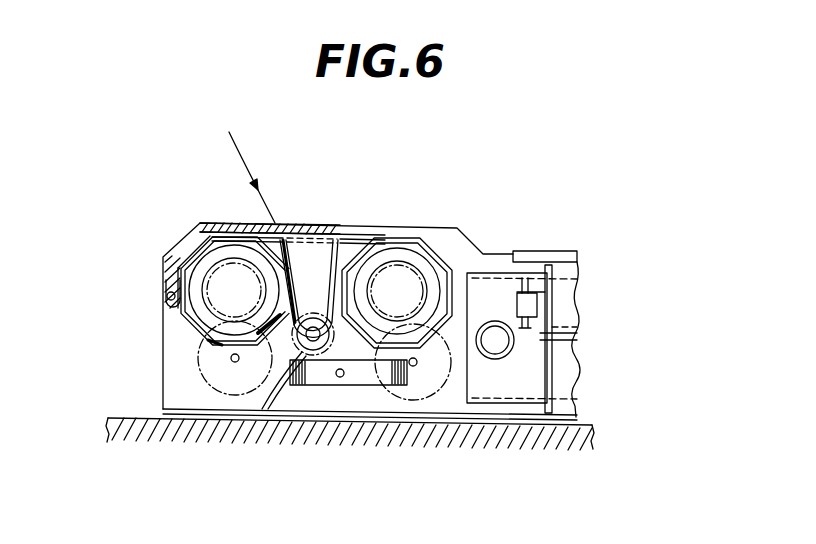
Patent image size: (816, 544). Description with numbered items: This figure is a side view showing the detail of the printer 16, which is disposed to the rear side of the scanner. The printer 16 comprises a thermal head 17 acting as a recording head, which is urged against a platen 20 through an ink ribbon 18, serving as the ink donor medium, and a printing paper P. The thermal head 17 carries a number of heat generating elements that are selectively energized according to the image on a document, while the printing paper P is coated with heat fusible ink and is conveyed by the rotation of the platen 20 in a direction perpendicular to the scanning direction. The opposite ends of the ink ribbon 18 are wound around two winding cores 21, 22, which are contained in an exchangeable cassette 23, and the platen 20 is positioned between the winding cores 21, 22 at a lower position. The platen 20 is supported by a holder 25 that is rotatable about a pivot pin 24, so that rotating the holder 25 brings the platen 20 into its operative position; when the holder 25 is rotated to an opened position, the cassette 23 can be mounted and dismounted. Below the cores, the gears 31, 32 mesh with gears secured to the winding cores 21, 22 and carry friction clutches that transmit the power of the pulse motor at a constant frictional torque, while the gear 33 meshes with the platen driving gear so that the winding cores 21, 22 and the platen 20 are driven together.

The printing paper P is at (250, 163).
The printer 16 is at (280, 385).
The thermal head 17 is at (302, 375).
The ink ribbon 18 is at (346, 258).
The platen 20 is at (283, 400).
The winding core 21 is at (233, 266).
The winding core 22 is at (400, 272).
The cassette 23 is at (200, 325).
The pivot pin 24 is at (190, 310).
The holder 25 is at (314, 317).
The gear 31 is at (225, 388).
The gear 32 is at (414, 394).
The gear 33 is at (318, 388).